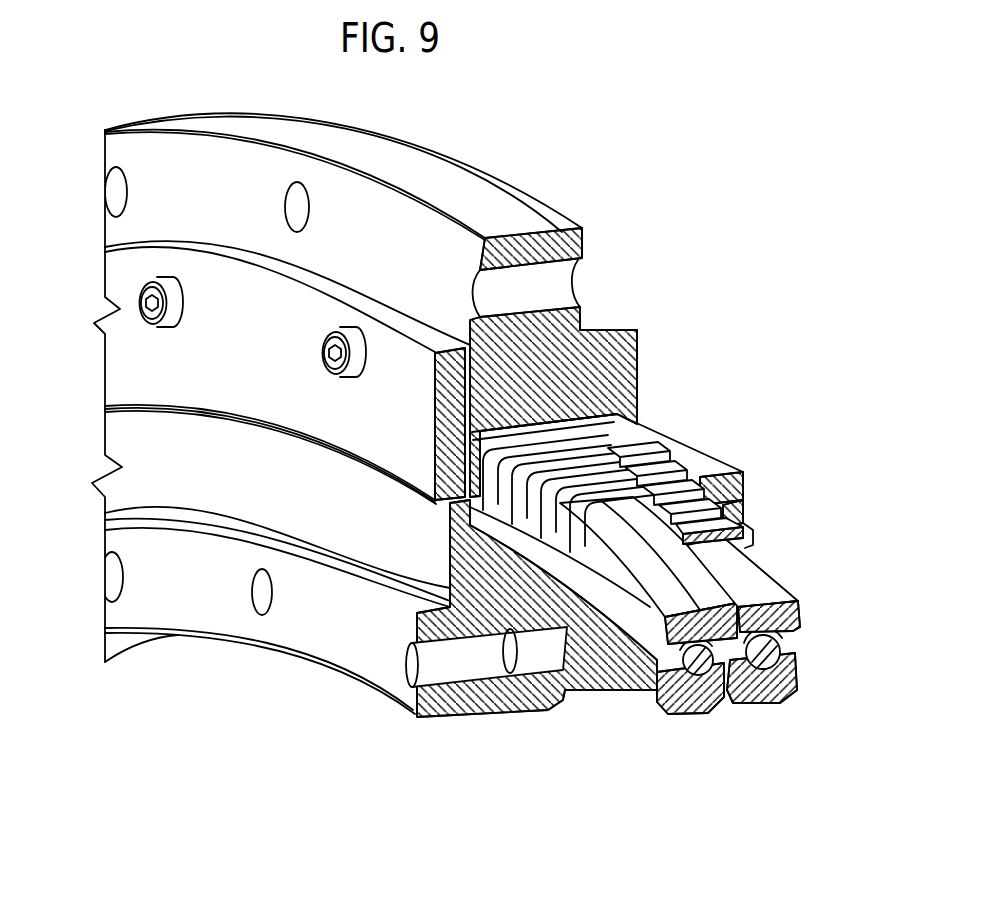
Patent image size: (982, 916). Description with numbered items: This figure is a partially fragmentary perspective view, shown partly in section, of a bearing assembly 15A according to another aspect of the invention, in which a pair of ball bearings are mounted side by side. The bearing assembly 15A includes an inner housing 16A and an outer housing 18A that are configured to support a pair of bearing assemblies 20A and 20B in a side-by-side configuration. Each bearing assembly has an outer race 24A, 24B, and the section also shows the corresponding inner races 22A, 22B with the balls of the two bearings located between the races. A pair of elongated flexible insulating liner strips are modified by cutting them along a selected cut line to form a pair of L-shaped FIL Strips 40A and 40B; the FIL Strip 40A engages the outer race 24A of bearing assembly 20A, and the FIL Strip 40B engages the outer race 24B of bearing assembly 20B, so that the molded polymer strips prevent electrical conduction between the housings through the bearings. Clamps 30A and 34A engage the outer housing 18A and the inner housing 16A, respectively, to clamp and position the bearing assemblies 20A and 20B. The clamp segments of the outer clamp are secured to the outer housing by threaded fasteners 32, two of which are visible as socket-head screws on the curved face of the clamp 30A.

The bearing assembly 15A is at (433, 148).
The outer housing 18A is at (537, 197).
The threaded fasteners 32 is at (140, 313).
The clamp 30A is at (125, 366).
The L-shaped FIL Strip 40B is at (633, 445).
The clamp 34A is at (723, 456).
The outer race 24B is at (803, 620).
The lower race segment B 22B is at (783, 695).
The L-shaped FIL Strip 40A is at (534, 507).
The outer race 24A is at (657, 623).
The lower race segment A 22A is at (657, 703).
The bearing assembly 20A is at (690, 717).
The bearing assembly 20B is at (758, 703).
The inner housing 16A is at (330, 670).